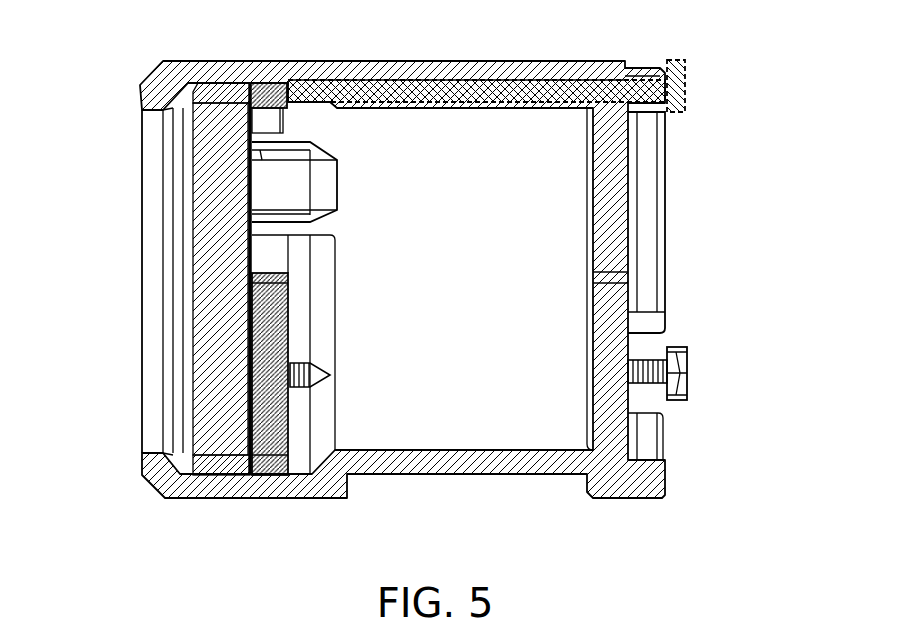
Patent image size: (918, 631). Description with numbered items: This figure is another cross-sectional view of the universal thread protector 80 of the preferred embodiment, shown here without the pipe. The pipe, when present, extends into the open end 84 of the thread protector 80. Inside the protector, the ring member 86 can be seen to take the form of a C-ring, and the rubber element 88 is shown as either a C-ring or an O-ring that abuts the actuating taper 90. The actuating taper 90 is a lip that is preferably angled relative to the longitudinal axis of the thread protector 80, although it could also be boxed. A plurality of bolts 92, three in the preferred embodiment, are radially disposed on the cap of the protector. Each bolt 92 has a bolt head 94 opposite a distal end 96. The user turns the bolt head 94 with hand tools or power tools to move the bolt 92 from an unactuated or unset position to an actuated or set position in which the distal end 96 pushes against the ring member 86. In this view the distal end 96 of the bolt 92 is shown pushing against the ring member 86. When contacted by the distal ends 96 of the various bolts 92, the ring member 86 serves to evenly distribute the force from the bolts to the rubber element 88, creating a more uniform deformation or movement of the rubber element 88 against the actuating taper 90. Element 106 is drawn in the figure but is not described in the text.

The universal thread protector 80 is at (738, 217).
The open end 84 is at (112, 199).
The ring member 86 is at (257, 83).
The rubber element 88 is at (228, 432).
The actuating taper 90 is at (188, 100).
The bolt 92 is at (390, 88).
The bolt head 94 is at (688, 90).
The distal end 96 is at (291, 83).
The sleeve 106 is at (668, 182).